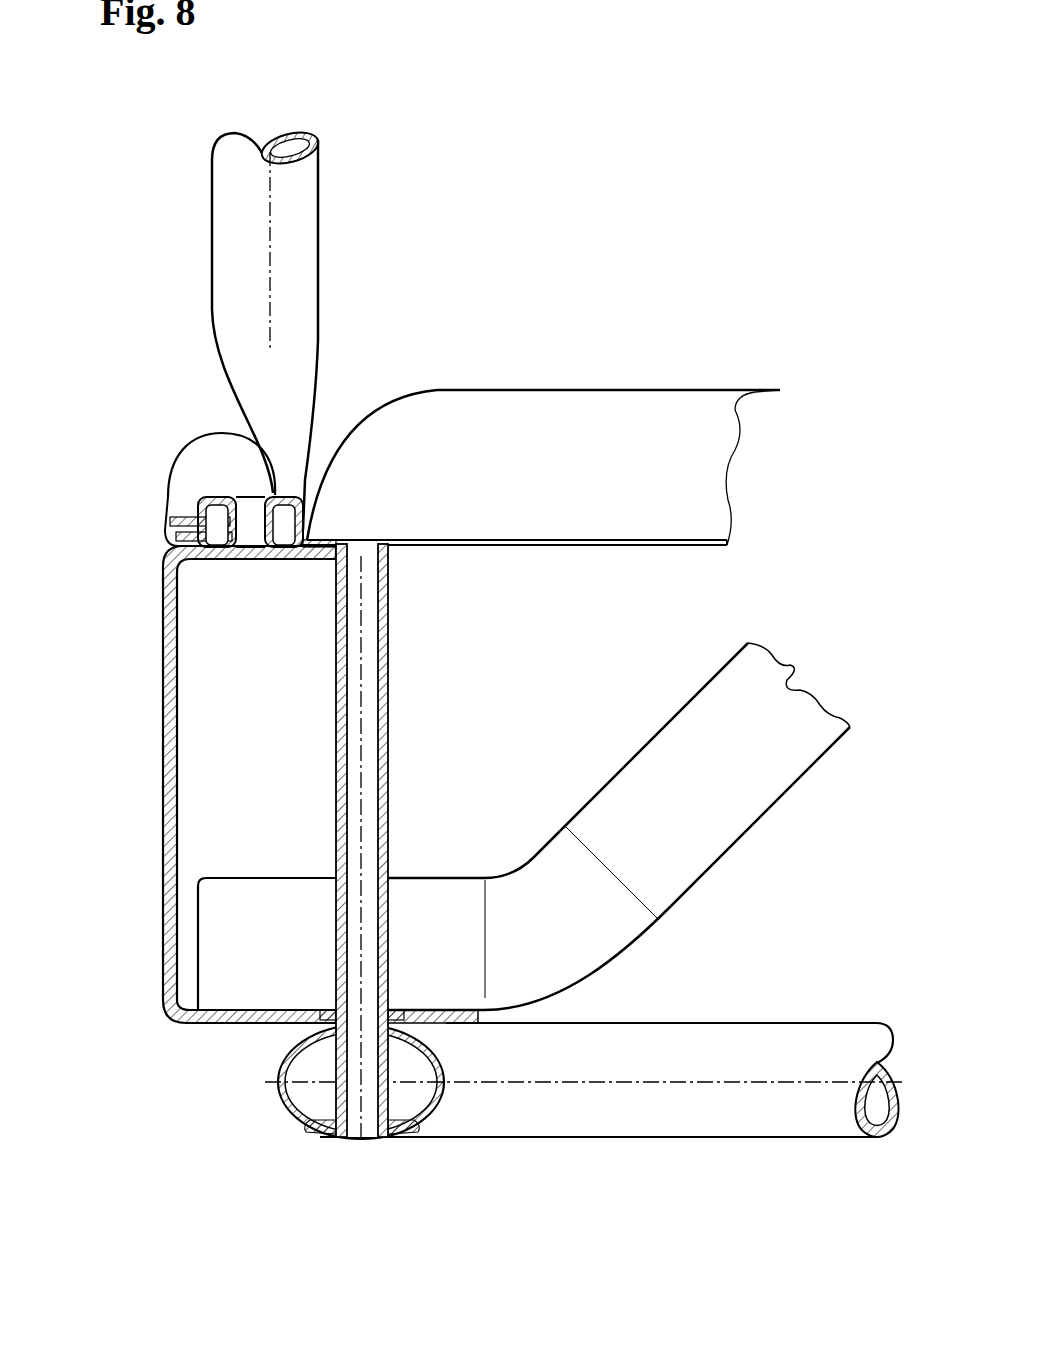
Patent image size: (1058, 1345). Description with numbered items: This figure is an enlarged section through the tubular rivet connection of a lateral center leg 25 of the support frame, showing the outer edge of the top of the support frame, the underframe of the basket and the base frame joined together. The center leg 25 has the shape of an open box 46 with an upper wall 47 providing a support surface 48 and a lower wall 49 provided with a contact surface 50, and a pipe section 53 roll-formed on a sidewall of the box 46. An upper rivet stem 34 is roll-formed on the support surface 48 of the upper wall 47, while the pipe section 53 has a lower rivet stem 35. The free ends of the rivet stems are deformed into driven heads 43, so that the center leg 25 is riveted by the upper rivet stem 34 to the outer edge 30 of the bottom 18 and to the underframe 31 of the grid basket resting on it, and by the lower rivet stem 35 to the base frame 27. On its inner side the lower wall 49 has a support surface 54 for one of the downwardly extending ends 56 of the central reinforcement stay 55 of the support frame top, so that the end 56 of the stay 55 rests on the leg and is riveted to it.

The bottom 18 is at (593, 440).
The lateral center leg 25 is at (160, 665).
The base frame 27 is at (585, 1141).
The outer edge 30 is at (168, 543).
The underframe 31 is at (183, 447).
The upper rivet stem 34 is at (240, 552).
The lower rivet stem 35 is at (300, 1125).
The driven head 43 is at (212, 497).
The open box 46 is at (160, 797).
The upper wall 47 is at (197, 560).
The support surface 48 is at (312, 560).
The lower wall 49 is at (232, 1023).
The contact surface 50 is at (263, 1025).
The pipe section 53 is at (336, 808).
The support surface 54 is at (276, 1043).
The central reinforcement stay 55 is at (762, 722).
The end 56 is at (439, 912).